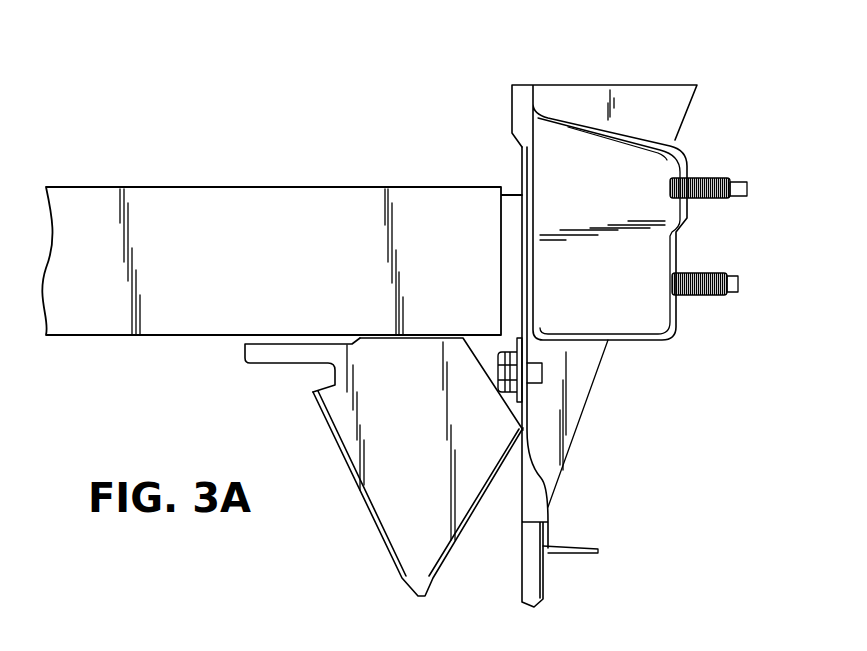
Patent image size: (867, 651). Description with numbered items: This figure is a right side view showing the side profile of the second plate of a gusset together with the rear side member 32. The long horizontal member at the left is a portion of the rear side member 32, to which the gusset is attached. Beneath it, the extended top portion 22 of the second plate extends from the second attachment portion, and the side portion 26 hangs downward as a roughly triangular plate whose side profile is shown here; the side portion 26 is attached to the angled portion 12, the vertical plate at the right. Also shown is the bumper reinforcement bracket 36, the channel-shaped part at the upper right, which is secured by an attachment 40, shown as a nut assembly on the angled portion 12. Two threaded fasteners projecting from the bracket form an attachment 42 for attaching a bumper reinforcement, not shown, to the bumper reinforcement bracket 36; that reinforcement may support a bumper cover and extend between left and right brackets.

The rear side member 32 is at (177, 337).
The extended top portion 22 is at (268, 366).
The side portion 26 is at (360, 495).
The bumper reinforcement bracket 36 is at (630, 338).
The angled portion 12 is at (470, 525).
The attachment 40 is at (542, 375).
The attachment 42 is at (707, 295).